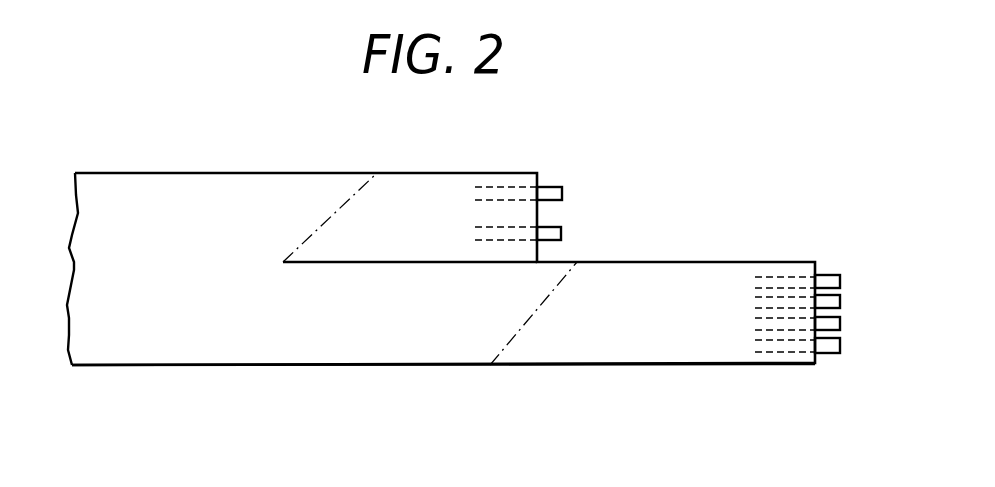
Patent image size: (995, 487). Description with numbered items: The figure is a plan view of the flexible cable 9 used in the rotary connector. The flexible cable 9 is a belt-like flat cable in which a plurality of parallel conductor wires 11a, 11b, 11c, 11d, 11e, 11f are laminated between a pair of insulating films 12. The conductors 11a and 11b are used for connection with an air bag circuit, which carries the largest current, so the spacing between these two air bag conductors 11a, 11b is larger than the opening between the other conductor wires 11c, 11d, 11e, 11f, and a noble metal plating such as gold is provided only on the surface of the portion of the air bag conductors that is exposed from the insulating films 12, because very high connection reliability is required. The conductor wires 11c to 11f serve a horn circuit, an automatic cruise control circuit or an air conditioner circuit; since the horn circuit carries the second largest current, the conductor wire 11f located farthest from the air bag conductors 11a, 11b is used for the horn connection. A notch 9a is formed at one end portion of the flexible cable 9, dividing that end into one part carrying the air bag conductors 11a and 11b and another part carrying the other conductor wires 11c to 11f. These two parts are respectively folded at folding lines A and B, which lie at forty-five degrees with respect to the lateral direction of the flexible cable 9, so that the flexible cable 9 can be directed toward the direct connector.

The flexible cable 9 is at (204, 172).
The notch 9a is at (395, 263).
The insulating films 12 is at (193, 343).
The folding line A is at (338, 205).
The folding line B is at (541, 303).
The conductor wire 11a is at (555, 187).
The conductor wire 11b is at (563, 232).
The conductor wire 11c is at (828, 275).
The conductor wire 11d is at (841, 308).
The conductor wire 11e is at (840, 325).
The conductor wire 11f is at (826, 355).